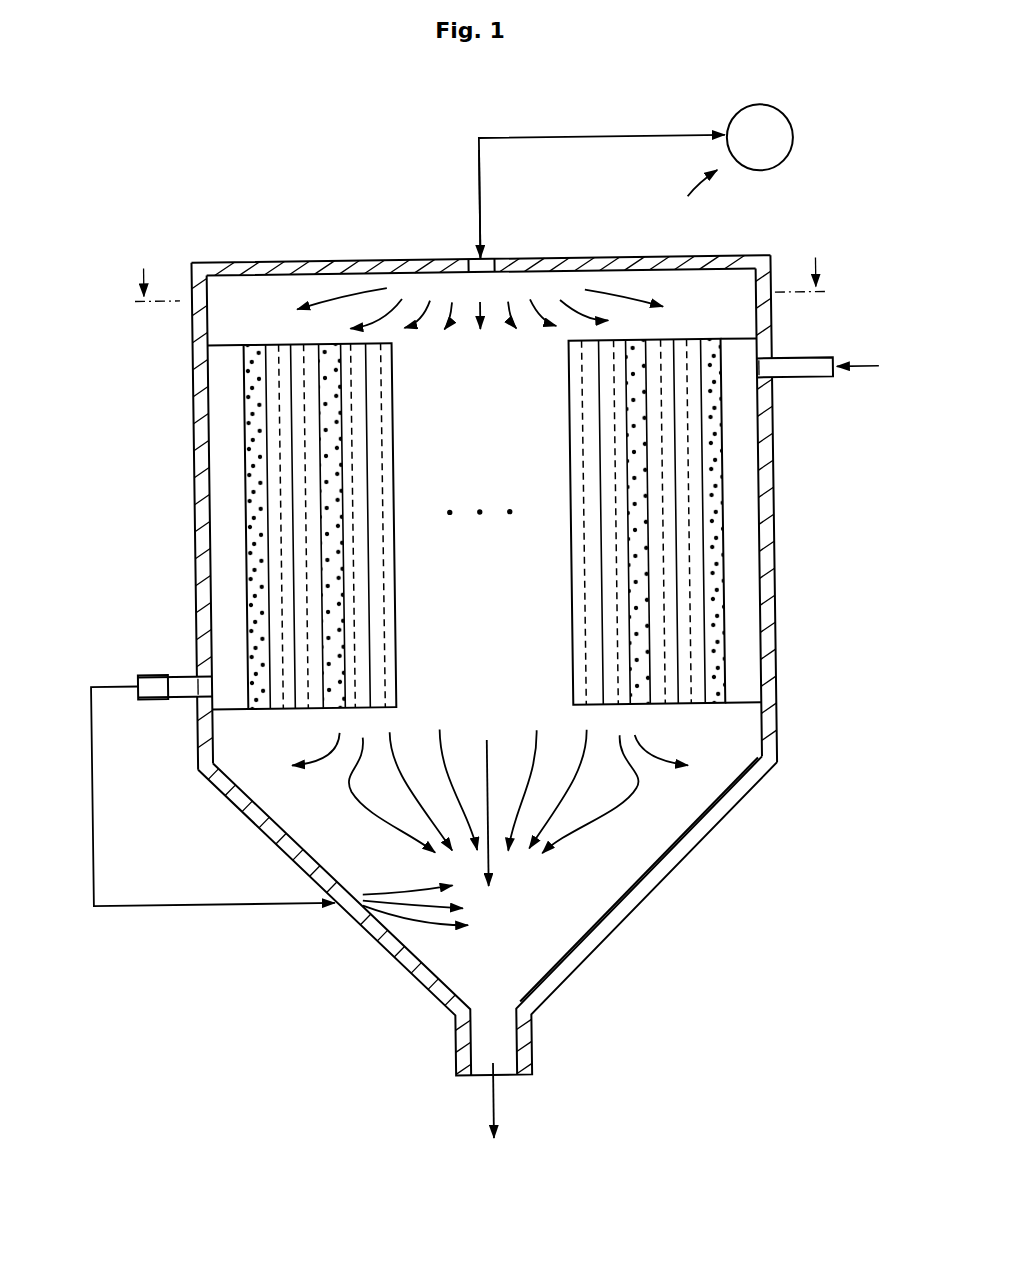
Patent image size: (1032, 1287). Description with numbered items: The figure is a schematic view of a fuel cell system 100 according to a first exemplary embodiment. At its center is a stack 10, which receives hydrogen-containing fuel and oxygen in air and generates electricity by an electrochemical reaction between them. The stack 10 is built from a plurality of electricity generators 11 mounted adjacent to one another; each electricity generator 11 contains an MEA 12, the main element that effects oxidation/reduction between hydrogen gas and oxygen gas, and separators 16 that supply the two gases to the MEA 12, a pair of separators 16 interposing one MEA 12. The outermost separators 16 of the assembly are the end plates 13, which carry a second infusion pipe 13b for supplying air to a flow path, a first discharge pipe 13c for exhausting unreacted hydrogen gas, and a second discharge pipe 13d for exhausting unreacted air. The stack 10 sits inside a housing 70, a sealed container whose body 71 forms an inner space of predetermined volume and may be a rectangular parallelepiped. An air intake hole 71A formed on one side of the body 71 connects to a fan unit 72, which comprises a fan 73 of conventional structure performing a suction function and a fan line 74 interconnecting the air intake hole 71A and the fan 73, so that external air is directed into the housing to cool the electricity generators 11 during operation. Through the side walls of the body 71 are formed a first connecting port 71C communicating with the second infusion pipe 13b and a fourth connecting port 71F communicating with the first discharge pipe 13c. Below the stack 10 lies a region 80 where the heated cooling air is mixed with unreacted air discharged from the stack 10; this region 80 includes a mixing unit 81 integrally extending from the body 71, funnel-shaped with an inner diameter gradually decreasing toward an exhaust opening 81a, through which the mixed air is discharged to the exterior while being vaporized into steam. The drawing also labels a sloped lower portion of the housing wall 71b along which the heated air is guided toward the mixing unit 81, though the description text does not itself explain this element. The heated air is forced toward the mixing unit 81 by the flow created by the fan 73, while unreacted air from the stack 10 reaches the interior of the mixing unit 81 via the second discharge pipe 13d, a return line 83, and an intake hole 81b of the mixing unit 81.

The fuel cell system 100 is at (197, 168).
The stack 10 is at (691, 317).
The electricity generator 11 is at (841, 465).
The MEA 12 is at (636, 478).
The separator 16 is at (658, 449).
The end plate 13 is at (196, 472).
The second infusion pipe 13b is at (797, 361).
The first discharge pipe 13c is at (181, 694).
The second discharge pipe 13d is at (137, 675).
The housing 70 is at (764, 252).
The body 71 is at (621, 259).
The air intake hole 71A is at (490, 262).
The hopper side wall 71b is at (238, 814).
The first connecting port 71C is at (771, 384).
The fourth connecting port 71F is at (190, 674).
The fan unit 72 is at (687, 194).
The fan 73 is at (773, 109).
The fan line 74 is at (633, 140).
The region 80 is at (720, 822).
The mixing unit 81 is at (666, 874).
The exhaust opening 81a is at (505, 1040).
The intake hole 81b is at (327, 908).
The return line 83 is at (86, 793).